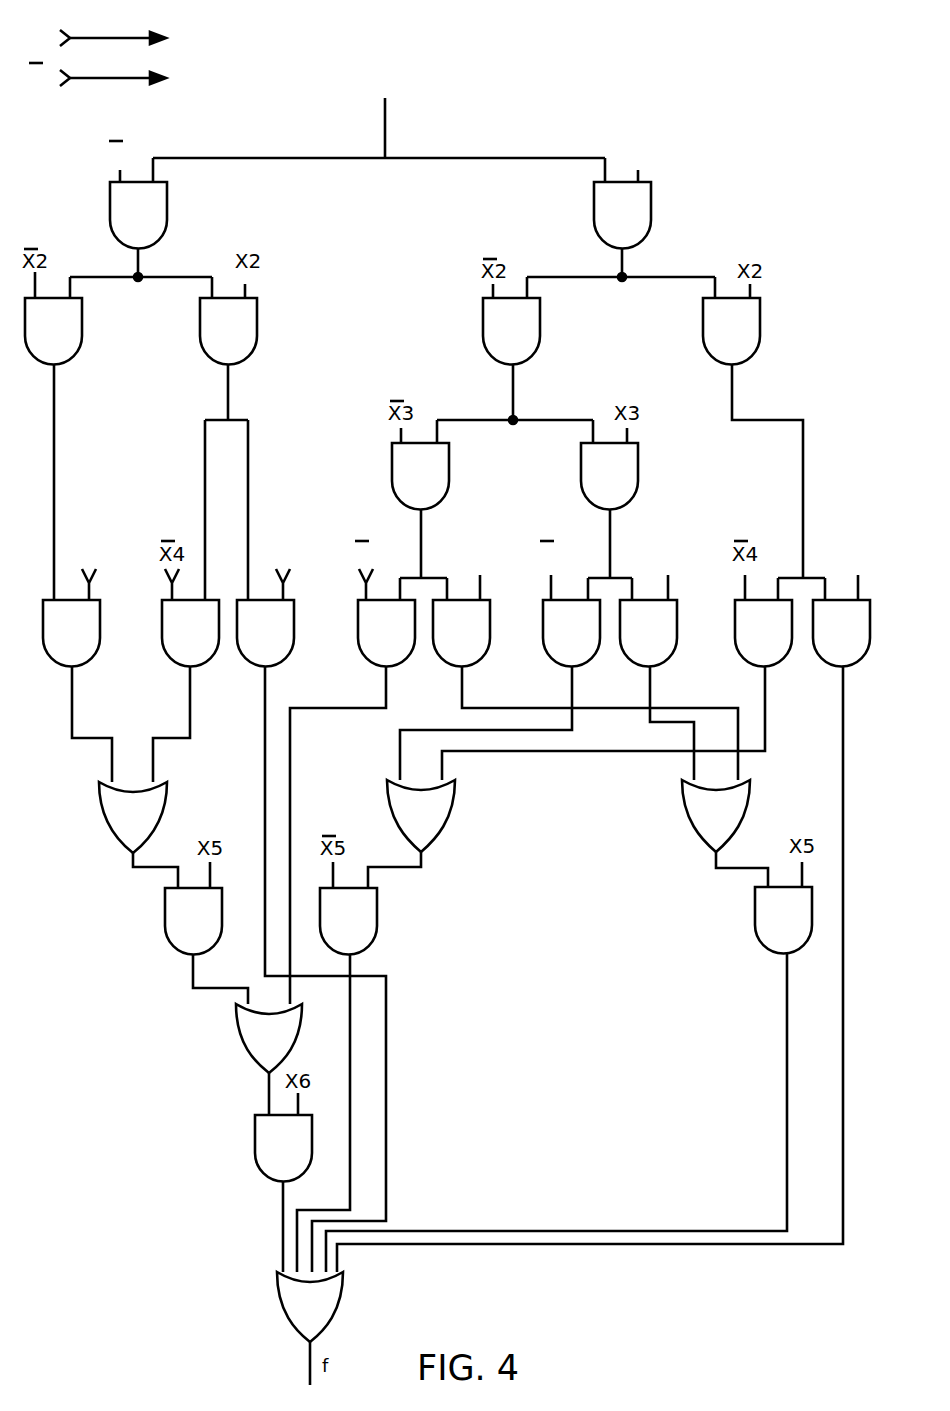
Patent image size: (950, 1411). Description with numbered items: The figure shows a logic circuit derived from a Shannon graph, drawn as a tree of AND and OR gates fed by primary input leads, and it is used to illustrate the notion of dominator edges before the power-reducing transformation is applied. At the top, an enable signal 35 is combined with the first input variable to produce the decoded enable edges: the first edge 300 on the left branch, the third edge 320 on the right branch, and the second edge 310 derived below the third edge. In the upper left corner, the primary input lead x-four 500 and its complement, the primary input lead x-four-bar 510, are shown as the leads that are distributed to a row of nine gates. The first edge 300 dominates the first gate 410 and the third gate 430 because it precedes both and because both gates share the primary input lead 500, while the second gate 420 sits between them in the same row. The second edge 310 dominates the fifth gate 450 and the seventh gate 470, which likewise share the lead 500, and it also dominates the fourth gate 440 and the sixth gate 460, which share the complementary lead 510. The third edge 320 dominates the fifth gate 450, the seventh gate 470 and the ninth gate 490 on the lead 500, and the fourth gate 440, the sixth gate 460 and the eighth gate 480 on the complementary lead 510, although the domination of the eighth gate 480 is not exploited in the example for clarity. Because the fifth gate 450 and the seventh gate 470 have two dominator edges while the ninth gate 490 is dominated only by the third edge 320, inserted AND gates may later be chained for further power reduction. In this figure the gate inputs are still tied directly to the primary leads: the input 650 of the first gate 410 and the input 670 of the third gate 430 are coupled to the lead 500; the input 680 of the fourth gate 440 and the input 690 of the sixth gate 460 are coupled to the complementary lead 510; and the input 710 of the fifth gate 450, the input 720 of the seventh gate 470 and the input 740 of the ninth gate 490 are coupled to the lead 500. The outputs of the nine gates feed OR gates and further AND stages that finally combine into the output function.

The enable signal 35 is at (376, 72).
The edge e1 300 is at (136, 276).
The edge e2 310 is at (511, 418).
The edge e3 320 is at (620, 276).
The gate g1 410 is at (93, 661).
The gate g2 420 is at (172, 661).
The gate g3 430 is at (245, 661).
The gate g4 440 is at (361, 660).
The gate g5 450 is at (481, 661).
The gate g6 460 is at (557, 661).
The gate g7 470 is at (671, 661).
The gate g8 480 is at (744, 660).
The gate g9 490 is at (827, 663).
The primary input lead x4 500 is at (123, 36).
The primary input lead x4' 510 is at (123, 80).
The input of gate g1 650 is at (92, 591).
The input of gate g3 670 is at (286, 586).
The input of gate g4 680 is at (364, 590).
The input of gate g6 690 is at (548, 590).
The input of gate g5 710 is at (482, 587).
The input of gate g7 720 is at (670, 587).
The input of gate g9 740 is at (852, 590).